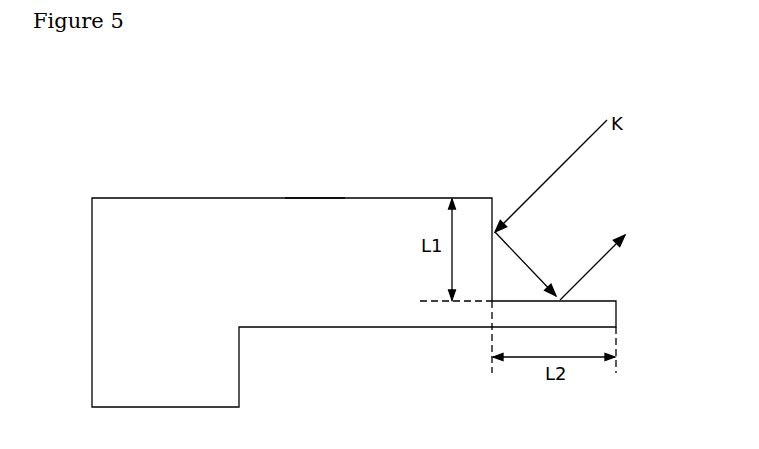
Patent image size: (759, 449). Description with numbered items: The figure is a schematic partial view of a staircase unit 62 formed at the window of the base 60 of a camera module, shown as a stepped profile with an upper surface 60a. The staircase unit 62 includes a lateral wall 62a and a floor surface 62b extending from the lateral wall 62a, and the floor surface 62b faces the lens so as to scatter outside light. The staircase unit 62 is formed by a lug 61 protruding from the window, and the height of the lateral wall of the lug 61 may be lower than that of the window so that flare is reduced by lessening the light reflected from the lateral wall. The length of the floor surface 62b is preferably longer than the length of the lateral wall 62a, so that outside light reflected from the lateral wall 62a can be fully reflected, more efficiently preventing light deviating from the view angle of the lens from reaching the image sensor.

The base 60 is at (102, 243).
The upper surface of light guide member 60a is at (312, 197).
The lug 61 is at (612, 313).
The staircase unit 62 is at (605, 242).
The lateral wall 62a is at (493, 267).
The floor surface 62b is at (626, 267).